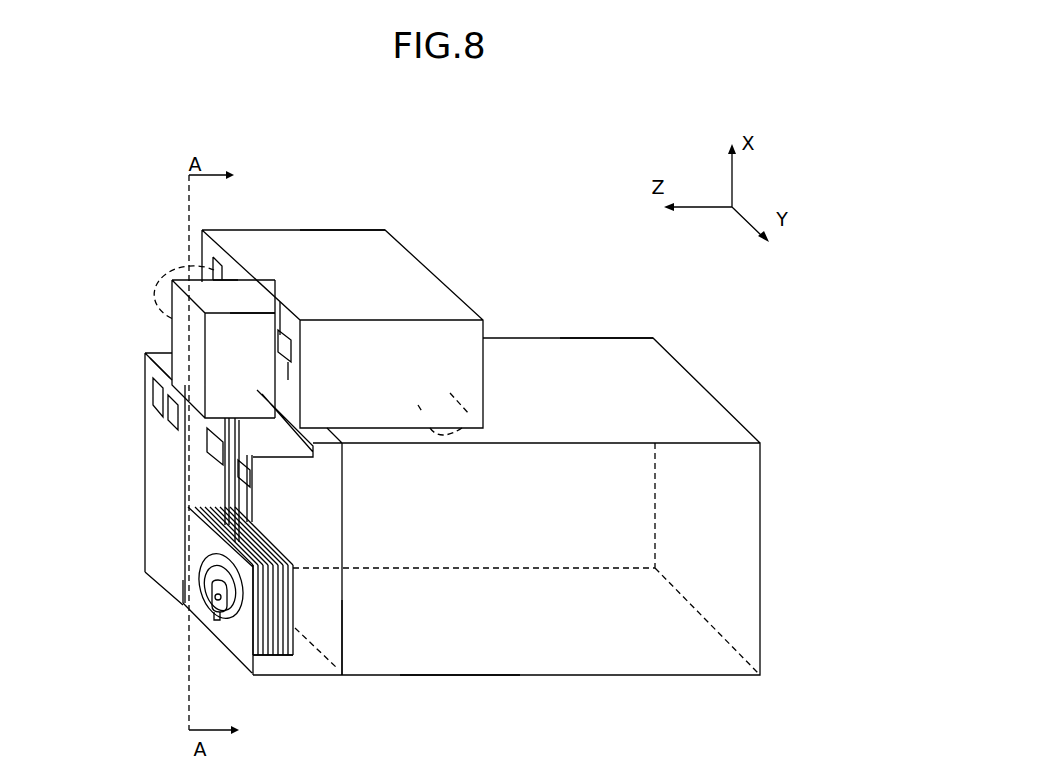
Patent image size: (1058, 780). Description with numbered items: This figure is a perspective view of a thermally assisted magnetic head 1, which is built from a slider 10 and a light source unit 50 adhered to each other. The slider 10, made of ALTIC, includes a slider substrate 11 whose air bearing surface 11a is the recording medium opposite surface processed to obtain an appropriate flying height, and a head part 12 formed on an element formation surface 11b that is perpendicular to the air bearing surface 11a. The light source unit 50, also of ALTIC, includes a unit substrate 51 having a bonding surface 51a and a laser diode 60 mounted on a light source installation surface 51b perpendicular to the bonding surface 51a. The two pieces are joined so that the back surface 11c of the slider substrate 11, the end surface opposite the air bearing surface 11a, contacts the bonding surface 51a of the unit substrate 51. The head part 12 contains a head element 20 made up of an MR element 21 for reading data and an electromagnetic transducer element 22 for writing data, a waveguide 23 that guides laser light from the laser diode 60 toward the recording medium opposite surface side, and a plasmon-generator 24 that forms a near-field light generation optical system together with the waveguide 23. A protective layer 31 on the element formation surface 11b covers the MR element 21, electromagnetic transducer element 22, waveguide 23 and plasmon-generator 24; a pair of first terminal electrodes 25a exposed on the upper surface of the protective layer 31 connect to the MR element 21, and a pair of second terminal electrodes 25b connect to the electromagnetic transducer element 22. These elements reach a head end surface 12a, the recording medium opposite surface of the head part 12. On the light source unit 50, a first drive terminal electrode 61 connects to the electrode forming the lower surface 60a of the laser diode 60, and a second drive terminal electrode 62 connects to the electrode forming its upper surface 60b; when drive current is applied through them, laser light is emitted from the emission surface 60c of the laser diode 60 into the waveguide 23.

The thermally assisted magnetic head 1 is at (557, 222).
The slider 10 is at (515, 678).
The slider substrate 11 is at (405, 660).
The air bearing surface 11a is at (463, 673).
The element formation surface 11b is at (325, 625).
The back surface 11c is at (613, 345).
The head part 12 is at (302, 665).
The head end surface 12a is at (173, 587).
The head element 20 is at (143, 688).
The MR element 21 is at (275, 657).
The electromagnetic transducer element 22 is at (230, 632).
The waveguide 23 is at (200, 507).
The plasmon-generator 24 is at (228, 636).
The first terminal electrodes 25a is at (148, 408).
The second terminal electrodes 25b is at (197, 477).
The protective layer 31 is at (163, 438).
The light source unit 50 is at (351, 218).
The unit substrate 51 is at (380, 243).
The bonding surface 51a is at (462, 430).
The light source installation surface 51b is at (289, 378).
The laser diode 60 is at (243, 305).
The lower surface of the laser diode 60a is at (258, 290).
The upper surface of the laser diode 60b is at (145, 367).
The emission surface 60c is at (192, 437).
The first drive terminal electrode 61 is at (282, 340).
The second drive terminal electrode 62 is at (220, 271).